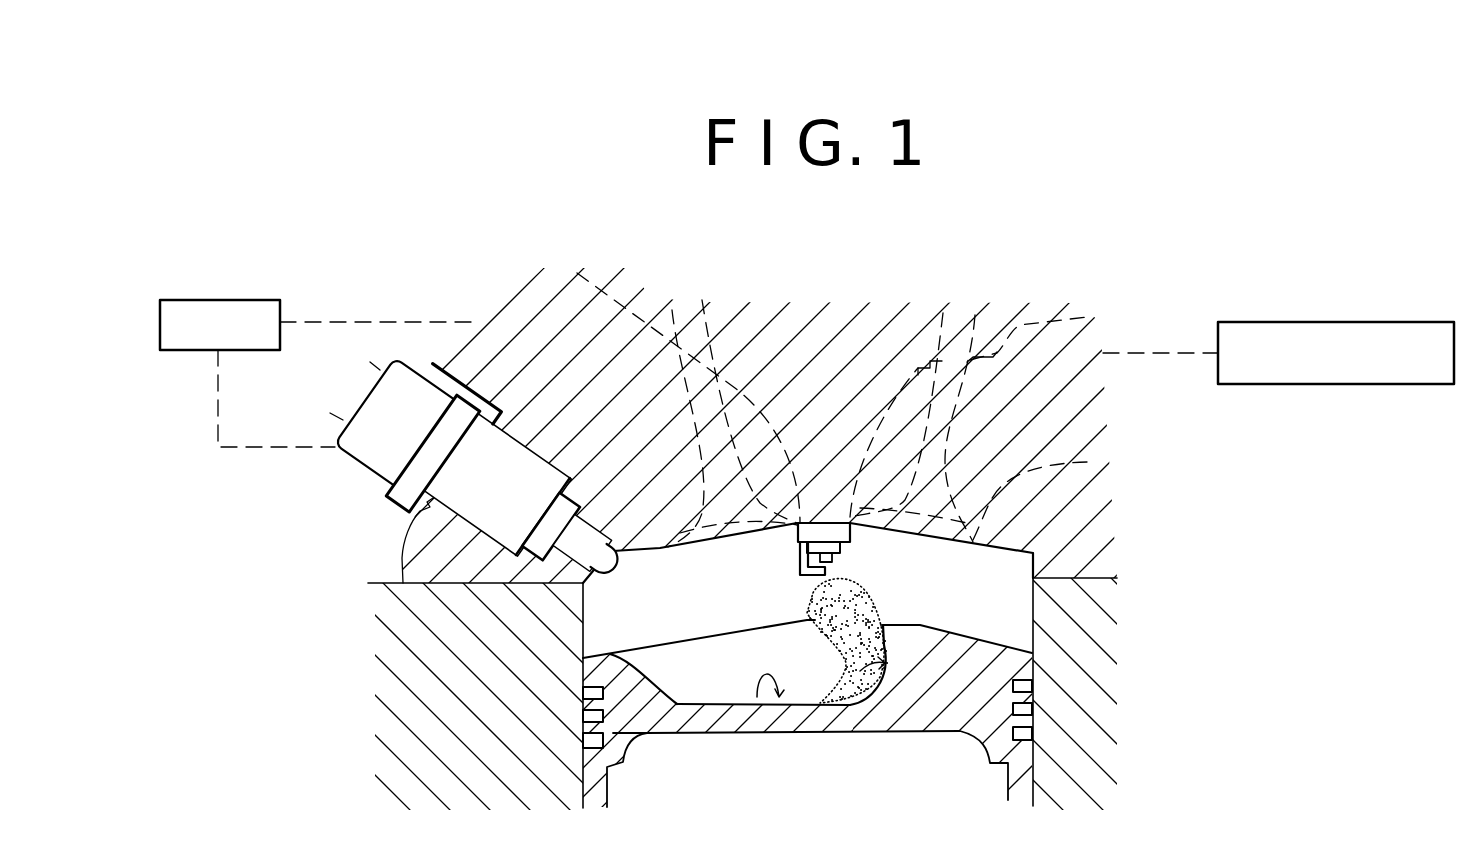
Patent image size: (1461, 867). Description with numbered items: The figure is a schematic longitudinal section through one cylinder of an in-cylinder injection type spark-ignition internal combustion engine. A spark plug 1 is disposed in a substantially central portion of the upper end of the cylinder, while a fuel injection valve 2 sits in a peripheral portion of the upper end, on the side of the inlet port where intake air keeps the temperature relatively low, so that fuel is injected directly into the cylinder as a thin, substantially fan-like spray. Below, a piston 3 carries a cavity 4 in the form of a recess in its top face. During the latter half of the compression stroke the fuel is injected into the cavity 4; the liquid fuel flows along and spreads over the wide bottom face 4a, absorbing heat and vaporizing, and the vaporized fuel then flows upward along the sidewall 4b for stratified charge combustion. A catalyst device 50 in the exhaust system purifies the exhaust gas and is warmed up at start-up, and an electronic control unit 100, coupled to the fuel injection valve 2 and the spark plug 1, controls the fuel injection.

The electronic control unit (ECU) 100 is at (229, 300).
The catalyst device 50 is at (1372, 322).
The spark plug 1 is at (826, 528).
The fuel injection valve 2 is at (378, 450).
The piston 3 is at (933, 704).
The cavity 4 is at (672, 688).
The bottom face of the cavity 4a is at (754, 704).
The sidewall of the cavity 4b is at (870, 682).